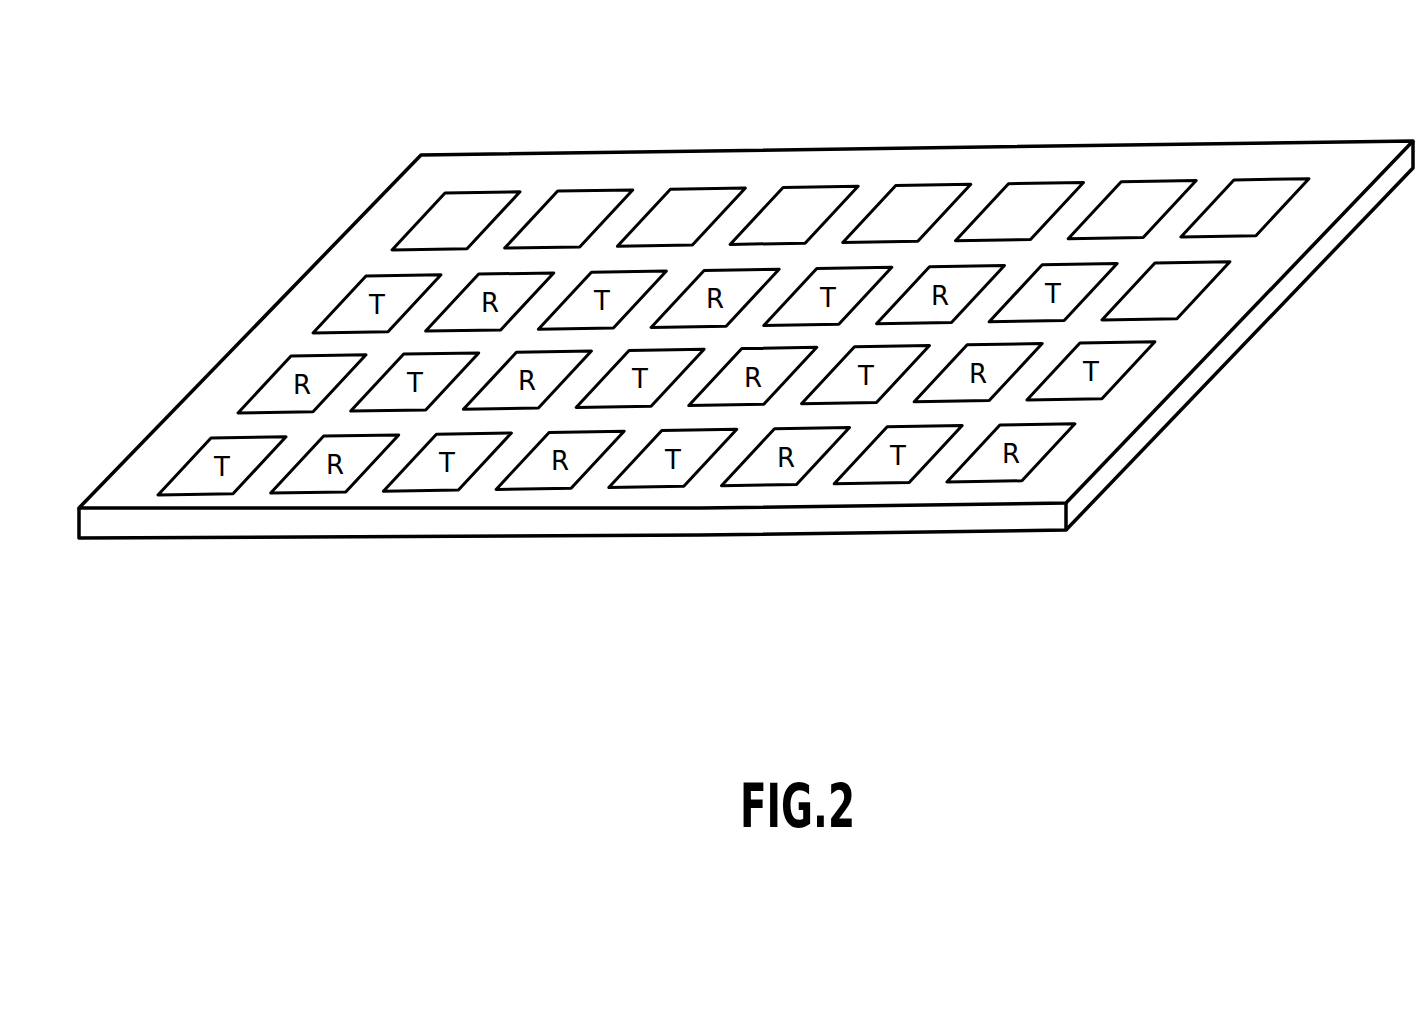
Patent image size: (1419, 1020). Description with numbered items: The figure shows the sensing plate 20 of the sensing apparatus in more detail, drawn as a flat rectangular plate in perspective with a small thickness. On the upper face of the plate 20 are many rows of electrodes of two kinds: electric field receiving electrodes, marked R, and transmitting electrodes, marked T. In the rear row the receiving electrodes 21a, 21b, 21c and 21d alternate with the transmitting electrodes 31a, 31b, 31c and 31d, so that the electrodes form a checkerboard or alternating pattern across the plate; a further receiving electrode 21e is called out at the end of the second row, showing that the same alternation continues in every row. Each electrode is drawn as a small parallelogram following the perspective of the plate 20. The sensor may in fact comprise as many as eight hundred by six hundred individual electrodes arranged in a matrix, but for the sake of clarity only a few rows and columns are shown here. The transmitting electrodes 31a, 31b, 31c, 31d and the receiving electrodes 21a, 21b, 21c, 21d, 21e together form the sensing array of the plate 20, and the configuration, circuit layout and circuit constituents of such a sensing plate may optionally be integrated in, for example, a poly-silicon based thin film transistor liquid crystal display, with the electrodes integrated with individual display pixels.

The sensing plate 20 is at (725, 523).
The electric field receiving electrode 21a is at (475, 193).
The electric field receiving electrode 21b is at (700, 189).
The electric field receiving electrode 21c is at (925, 186).
The electric field receiving electrode 21d is at (1150, 182).
The electric field receiving electrode 21e is at (1203, 291).
The transmitting electrode 31a is at (588, 191).
The transmitting electrode 31b is at (812, 187).
The transmitting electrode 31c is at (1038, 184).
The transmitting electrode 31d is at (1262, 180).